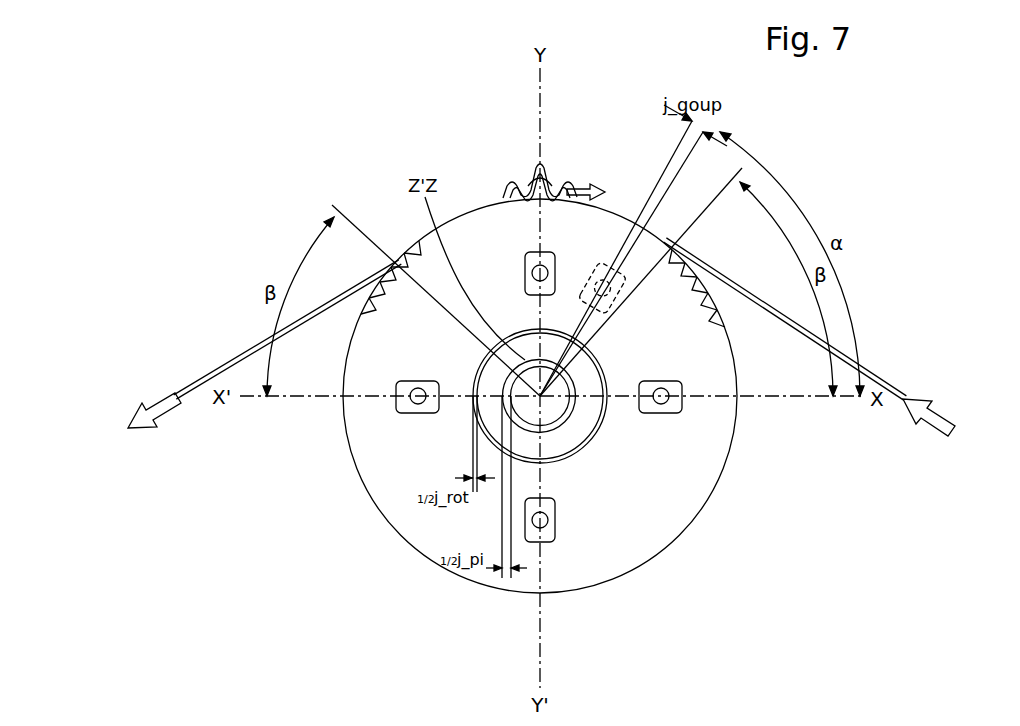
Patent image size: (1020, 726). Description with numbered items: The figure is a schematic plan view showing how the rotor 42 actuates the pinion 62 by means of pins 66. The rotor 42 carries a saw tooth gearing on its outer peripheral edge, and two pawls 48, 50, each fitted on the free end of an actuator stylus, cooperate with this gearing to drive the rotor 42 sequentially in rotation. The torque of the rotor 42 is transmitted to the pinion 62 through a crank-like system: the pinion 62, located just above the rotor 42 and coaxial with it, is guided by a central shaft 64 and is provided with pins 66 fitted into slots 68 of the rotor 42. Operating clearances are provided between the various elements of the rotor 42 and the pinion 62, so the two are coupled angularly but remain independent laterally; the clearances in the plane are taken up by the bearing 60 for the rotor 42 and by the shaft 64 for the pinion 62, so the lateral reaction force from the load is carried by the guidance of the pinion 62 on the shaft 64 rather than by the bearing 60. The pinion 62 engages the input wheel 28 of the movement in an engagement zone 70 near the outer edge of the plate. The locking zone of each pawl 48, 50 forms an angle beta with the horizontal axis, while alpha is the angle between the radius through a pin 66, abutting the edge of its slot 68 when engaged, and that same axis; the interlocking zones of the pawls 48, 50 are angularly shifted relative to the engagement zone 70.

The input wheel 28 is at (522, 170).
The rotor 42 is at (476, 590).
The pawl 48 is at (700, 263).
The pawl 50 is at (398, 258).
The bearing 60 is at (563, 408).
The pinion 62 is at (551, 178).
The central shaft 64 is at (578, 436).
The pins 66 is at (640, 262).
The slots 68 is at (596, 262).
The engagement zone 70 is at (527, 162).